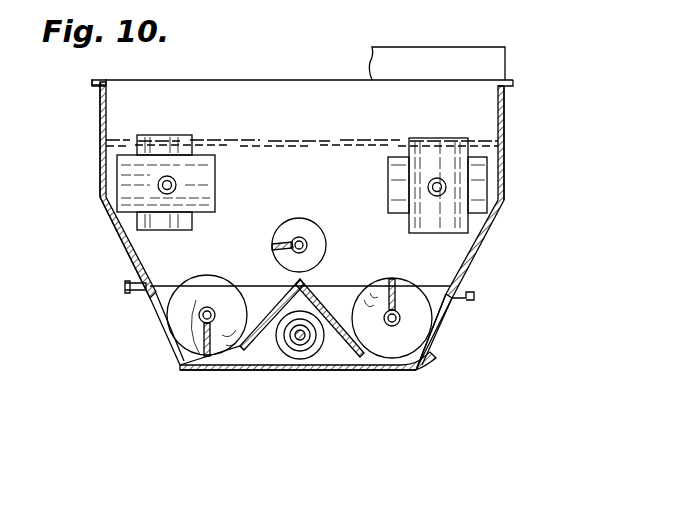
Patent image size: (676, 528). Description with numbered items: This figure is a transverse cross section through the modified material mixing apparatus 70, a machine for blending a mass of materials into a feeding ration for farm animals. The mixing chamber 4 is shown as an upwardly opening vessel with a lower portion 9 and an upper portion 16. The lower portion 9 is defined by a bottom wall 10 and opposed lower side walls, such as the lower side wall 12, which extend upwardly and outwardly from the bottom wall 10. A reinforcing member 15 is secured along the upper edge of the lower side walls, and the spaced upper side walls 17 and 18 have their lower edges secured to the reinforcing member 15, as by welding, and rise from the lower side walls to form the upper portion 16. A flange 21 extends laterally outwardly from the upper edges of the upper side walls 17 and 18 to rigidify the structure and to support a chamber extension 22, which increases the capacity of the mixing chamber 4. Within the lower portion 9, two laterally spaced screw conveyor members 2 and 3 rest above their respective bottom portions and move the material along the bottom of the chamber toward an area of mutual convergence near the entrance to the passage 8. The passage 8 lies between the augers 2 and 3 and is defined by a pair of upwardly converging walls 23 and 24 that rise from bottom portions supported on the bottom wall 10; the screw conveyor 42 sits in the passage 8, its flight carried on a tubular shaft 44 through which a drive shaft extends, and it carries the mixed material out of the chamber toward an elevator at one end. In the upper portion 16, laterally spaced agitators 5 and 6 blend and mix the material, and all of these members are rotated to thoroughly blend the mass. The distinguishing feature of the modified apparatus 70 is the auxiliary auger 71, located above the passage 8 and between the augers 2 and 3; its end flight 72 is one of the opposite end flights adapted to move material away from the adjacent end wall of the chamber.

The screw conveyor member 2 is at (207, 310).
The screw conveyor member 3 is at (402, 318).
The mixing chamber 4 is at (279, 172).
The agitator 5 is at (208, 194).
The agitator 6 is at (396, 173).
The passage 8 is at (272, 336).
The lower portion 9 is at (255, 302).
The bottom wall 10 is at (358, 366).
The lower side wall 12 is at (430, 355).
The reinforcing member 15 is at (138, 283).
The upper portion 16 is at (104, 133).
The upper side wall 17 is at (102, 185).
The upper side wall 18 is at (505, 147).
The flange 21 is at (99, 86).
The chamber extension 22 is at (447, 60).
The converging wall 23 is at (273, 305).
The converging wall 24 is at (322, 302).
The screw conveyor 42 is at (306, 358).
The roller hub 44 is at (296, 345).
The modified material mixing apparatus 70 is at (513, 73).
The auxiliary auger 71 is at (307, 243).
The end flight 72 is at (296, 234).